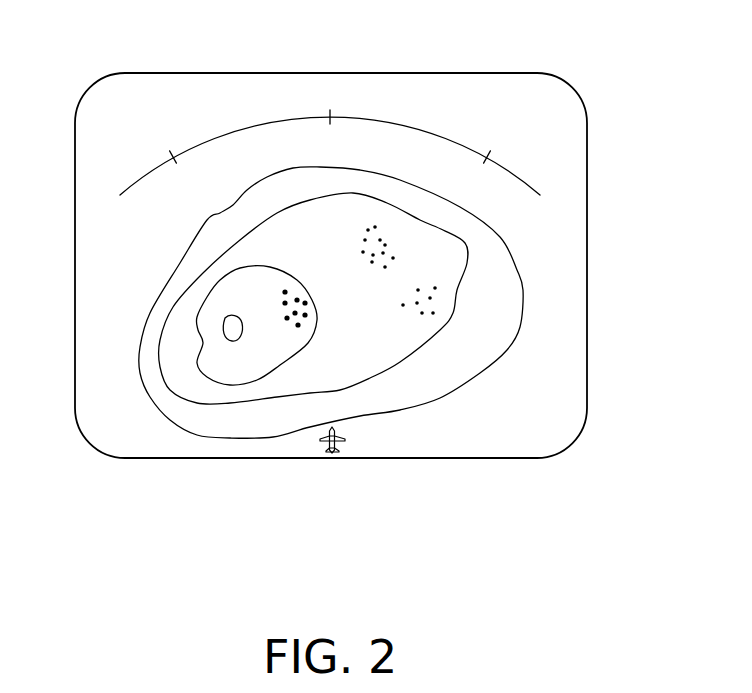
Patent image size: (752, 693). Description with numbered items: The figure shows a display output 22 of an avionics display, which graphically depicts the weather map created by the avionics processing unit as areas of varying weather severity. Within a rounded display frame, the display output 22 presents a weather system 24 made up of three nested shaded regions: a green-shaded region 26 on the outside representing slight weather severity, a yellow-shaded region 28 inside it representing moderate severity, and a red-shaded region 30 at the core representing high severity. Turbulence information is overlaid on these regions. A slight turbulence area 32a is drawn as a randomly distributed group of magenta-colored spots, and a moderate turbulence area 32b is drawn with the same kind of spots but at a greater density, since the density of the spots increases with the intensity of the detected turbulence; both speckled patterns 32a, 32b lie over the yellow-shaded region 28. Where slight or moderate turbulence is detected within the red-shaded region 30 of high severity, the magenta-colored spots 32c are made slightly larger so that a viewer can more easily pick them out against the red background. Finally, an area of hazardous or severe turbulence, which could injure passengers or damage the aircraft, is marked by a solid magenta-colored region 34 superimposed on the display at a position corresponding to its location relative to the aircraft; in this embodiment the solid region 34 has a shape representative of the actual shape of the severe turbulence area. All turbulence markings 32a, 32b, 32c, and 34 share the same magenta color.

The display output 22 is at (130, 417).
The weather system 24 is at (208, 208).
The green-shaded region 26 is at (471, 365).
The yellow-shaded region 28 is at (450, 258).
The red-shaded region 30 is at (220, 367).
The slight turbulence area 32a is at (440, 307).
The moderate turbulence area 32b is at (382, 243).
The magenta-colored spots 32c is at (303, 323).
The solid magenta-colored region 34 is at (236, 330).